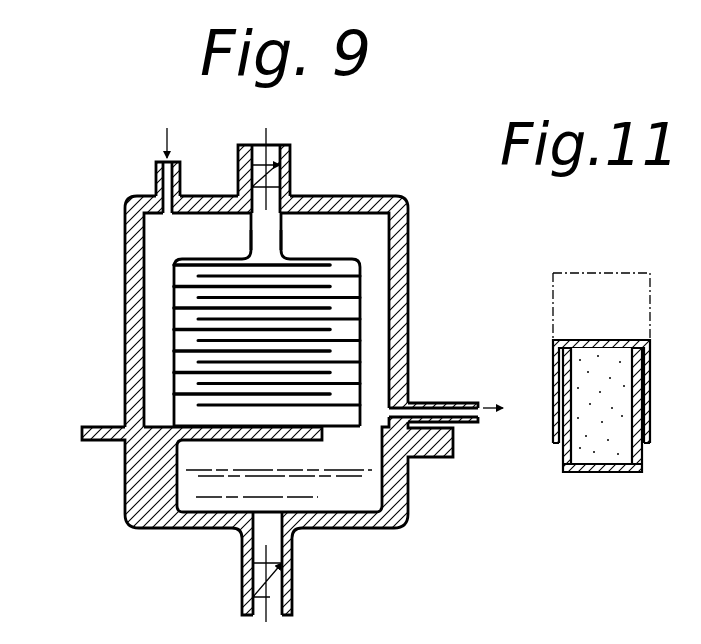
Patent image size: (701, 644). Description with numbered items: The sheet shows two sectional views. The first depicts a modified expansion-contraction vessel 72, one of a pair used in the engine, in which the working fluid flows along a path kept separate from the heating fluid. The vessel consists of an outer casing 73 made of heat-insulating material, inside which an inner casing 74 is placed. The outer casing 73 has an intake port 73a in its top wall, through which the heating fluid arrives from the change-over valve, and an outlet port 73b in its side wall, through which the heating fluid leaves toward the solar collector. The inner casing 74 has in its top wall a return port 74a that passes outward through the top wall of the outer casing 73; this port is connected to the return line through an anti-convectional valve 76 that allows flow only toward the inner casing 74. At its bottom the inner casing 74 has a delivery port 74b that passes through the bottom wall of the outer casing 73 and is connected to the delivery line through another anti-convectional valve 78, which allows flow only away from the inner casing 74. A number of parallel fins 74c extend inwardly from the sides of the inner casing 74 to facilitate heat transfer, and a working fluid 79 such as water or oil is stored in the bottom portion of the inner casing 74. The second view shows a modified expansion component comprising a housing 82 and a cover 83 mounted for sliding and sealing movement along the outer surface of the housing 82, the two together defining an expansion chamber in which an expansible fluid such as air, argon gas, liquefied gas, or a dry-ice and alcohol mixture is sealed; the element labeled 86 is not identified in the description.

In FIG. 9, the expansion-contraction vessel 72 is at (364, 194).
In FIG. 9, the outer casing 73 is at (408, 255).
In FIG. 9, the intake port 73a is at (162, 173).
In FIG. 9, the outlet port 73b is at (450, 410).
In FIG. 9, the inner casing 74 is at (364, 288).
In FIG. 9, the return port 74a is at (270, 234).
In FIG. 9, the bottom delivery port 74b is at (288, 540).
In FIG. 9, the fins 74c is at (213, 253).
In FIG. 9, the anti-convectional valve 76 is at (254, 168).
In FIG. 9, the anti-convectional valve 78 is at (282, 588).
In FIG. 9, the working fluid 79 is at (337, 483).
In FIG. 11, the housing 82 is at (587, 474).
In FIG. 11, the cover 83 is at (650, 405).
In FIG. 11, the cap 86 is at (596, 345).